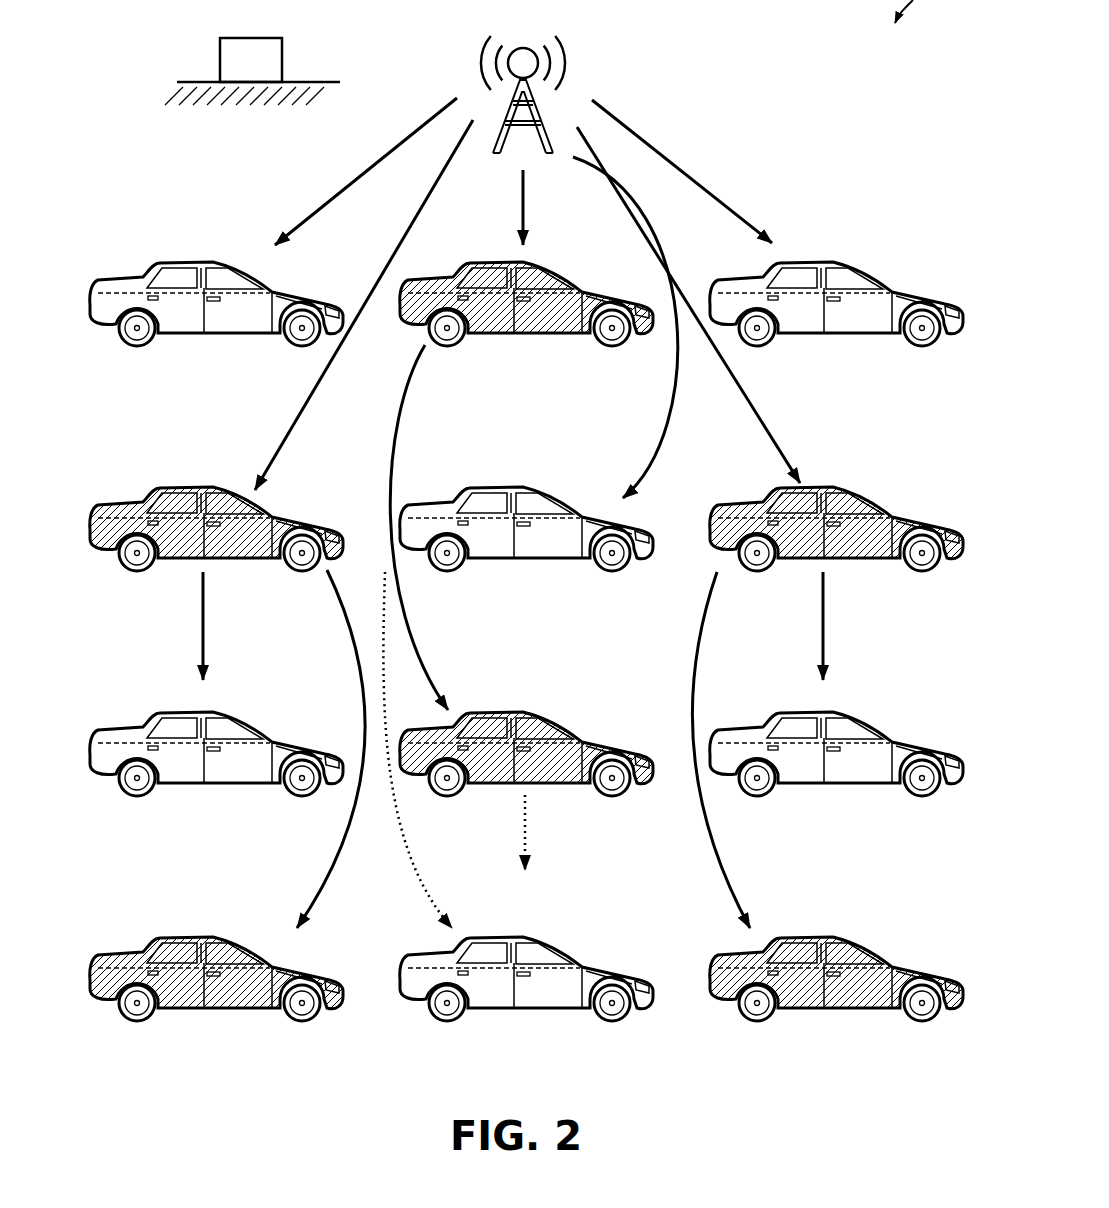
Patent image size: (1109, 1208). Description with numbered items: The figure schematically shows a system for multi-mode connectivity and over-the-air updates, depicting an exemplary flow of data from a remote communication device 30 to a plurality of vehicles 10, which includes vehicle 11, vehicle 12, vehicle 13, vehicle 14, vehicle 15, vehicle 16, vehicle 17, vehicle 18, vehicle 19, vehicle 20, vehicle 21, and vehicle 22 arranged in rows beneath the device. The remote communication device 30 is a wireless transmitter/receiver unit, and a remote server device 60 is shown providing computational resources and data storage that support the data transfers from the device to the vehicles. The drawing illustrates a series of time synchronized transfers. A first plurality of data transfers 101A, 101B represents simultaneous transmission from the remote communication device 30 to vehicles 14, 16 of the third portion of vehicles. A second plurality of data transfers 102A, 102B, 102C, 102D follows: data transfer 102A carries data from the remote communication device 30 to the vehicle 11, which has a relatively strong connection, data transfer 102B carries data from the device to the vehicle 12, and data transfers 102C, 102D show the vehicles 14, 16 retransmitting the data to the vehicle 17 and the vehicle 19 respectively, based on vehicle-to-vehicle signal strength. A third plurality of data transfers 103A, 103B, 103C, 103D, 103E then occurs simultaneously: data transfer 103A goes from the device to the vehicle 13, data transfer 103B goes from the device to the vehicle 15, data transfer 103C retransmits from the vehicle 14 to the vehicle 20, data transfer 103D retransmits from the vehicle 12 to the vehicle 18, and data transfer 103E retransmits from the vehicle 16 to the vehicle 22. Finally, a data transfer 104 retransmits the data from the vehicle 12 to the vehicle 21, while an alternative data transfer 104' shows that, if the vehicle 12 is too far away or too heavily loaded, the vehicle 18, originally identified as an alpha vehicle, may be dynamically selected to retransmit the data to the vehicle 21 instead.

The plurality of vehicles 10 is at (902, 145).
The remote communication device 30 is at (543, 120).
The remote server device 60 is at (238, 72).
The vehicle 11 is at (172, 262).
The vehicle 12 is at (596, 290).
The vehicle 13 is at (902, 290).
The vehicle 14 is at (172, 487).
The vehicle 15 is at (596, 515).
The vehicle 16 is at (902, 515).
The vehicle 17 is at (172, 712).
The vehicle 18 is at (596, 740).
The vehicle 19 is at (902, 740).
The vehicle 20 is at (172, 937).
The vehicle 21 is at (596, 965).
The vehicle 22 is at (902, 965).
The data transfer 101A is at (295, 417).
The data transfer 101B is at (755, 408).
The data transfer 102A is at (342, 187).
The data transfer 102B is at (480, 207).
The data transfer 102C is at (212, 625).
The data transfer 102D is at (832, 628).
The data transfer 103A is at (692, 180).
The data transfer 103B is at (677, 408).
The data transfer 103C is at (333, 868).
The data transfer 103D is at (407, 640).
The data transfer 103E is at (718, 838).
The data transfer 104 is at (438, 750).
The data transfer 104' is at (587, 832).